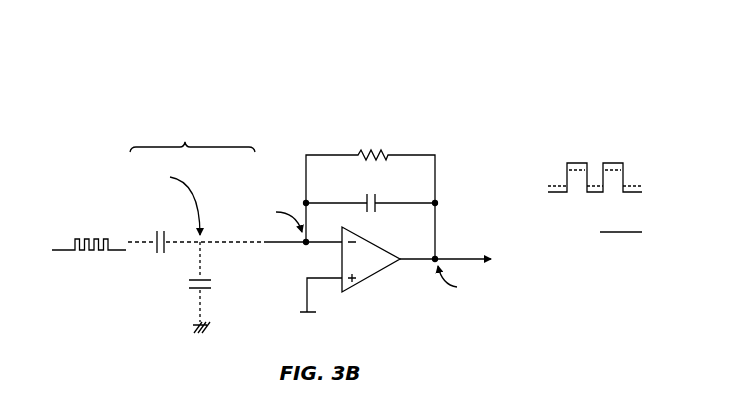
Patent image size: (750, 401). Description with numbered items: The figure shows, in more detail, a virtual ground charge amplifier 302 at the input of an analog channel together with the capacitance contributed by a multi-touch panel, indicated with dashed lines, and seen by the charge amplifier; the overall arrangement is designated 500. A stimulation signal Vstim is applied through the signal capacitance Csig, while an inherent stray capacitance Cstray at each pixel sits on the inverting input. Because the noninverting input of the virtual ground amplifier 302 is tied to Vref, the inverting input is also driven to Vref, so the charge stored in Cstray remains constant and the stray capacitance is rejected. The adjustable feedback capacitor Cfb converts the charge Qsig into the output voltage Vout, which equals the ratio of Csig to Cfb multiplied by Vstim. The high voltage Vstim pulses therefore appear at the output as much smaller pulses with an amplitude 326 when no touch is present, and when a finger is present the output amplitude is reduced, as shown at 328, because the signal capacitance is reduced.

The virtual ground amplifier circuit 500 is at (540, 34).
The virtual ground amplifier 302 is at (293, 133).
The output pulse amplitude without touch 326 is at (576, 162).
The reduced output pulse amplitude with touch 328 is at (615, 172).